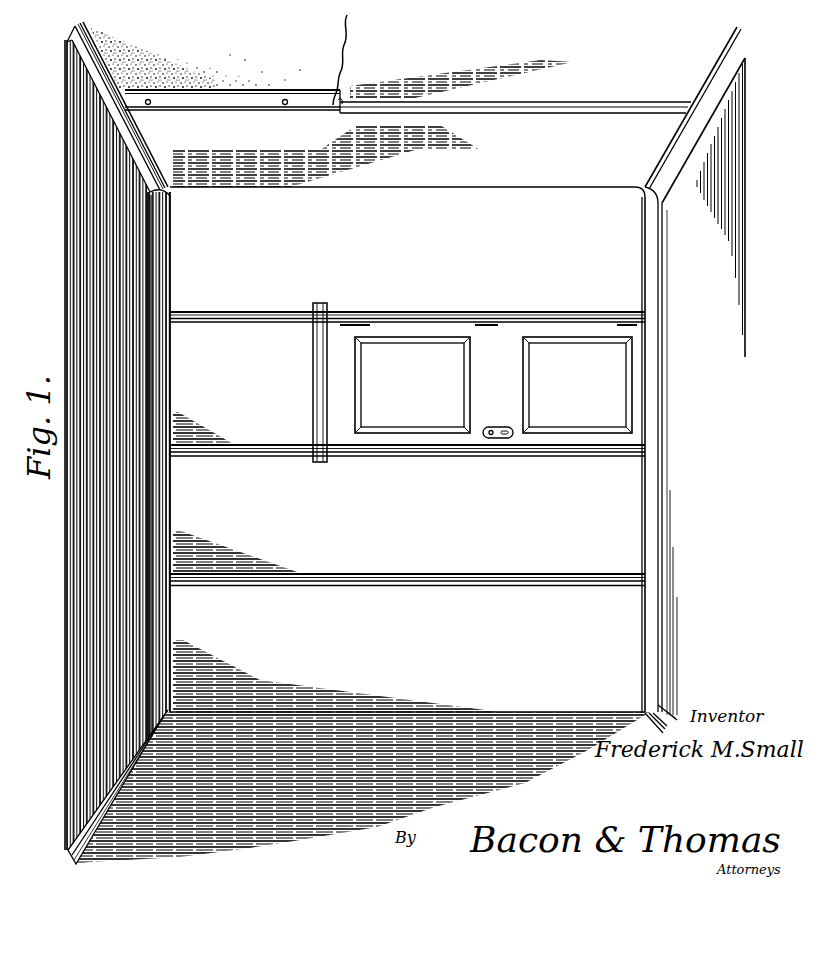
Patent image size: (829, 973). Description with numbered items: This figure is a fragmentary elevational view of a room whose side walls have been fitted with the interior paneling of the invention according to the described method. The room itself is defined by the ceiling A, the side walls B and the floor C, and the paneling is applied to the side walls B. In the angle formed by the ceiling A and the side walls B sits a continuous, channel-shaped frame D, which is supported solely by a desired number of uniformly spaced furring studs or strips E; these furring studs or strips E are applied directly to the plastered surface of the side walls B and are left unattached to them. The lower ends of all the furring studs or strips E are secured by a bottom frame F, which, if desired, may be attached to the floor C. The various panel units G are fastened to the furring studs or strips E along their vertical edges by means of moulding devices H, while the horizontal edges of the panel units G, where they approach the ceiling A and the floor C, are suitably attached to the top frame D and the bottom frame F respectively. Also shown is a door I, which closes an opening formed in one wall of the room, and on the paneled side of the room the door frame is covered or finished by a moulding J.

The ceiling A is at (82, 250).
The side walls B is at (190, 74).
The floor C is at (717, 337).
The channel-shaped frame D is at (100, 98).
The furring studs or strips E is at (312, 97).
The bottom frame F is at (673, 175).
The panel units G is at (407, 449).
The moulding devices H is at (488, 577).
The door I is at (493, 387).
The moulding J is at (458, 310).